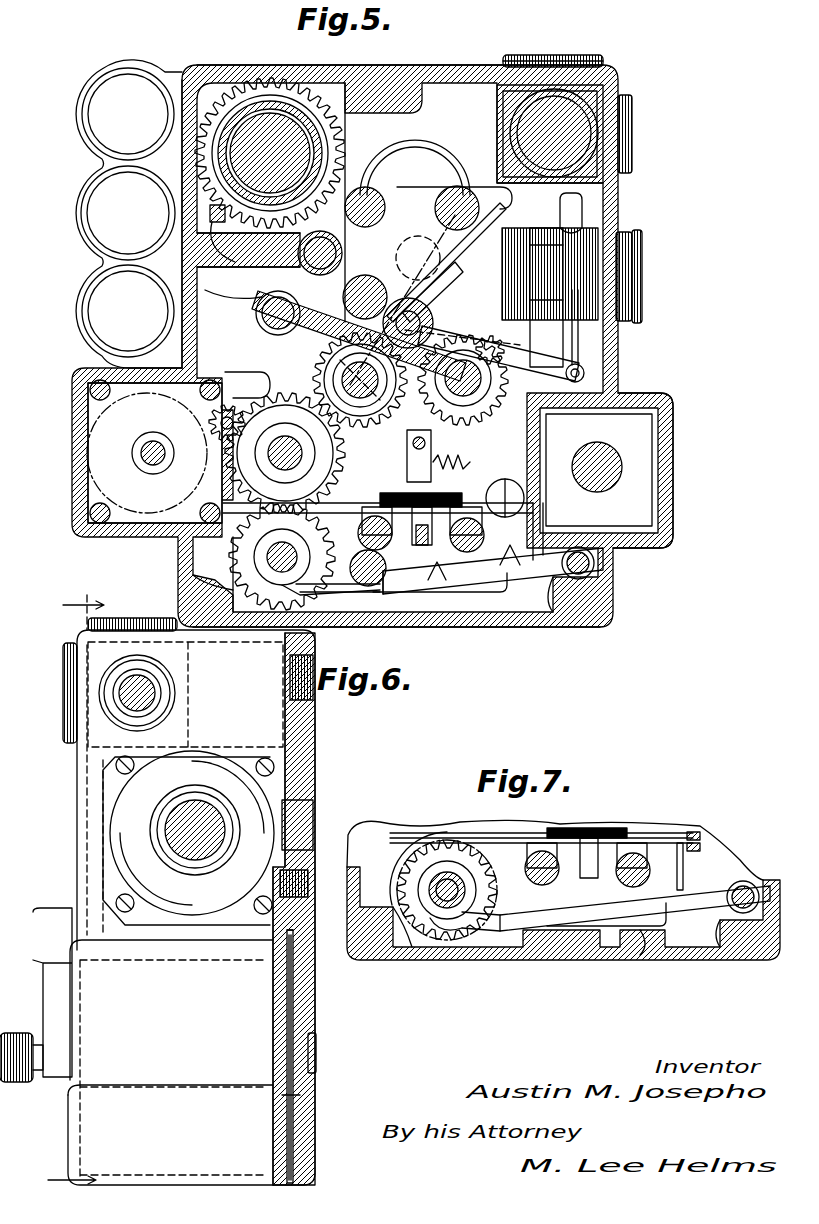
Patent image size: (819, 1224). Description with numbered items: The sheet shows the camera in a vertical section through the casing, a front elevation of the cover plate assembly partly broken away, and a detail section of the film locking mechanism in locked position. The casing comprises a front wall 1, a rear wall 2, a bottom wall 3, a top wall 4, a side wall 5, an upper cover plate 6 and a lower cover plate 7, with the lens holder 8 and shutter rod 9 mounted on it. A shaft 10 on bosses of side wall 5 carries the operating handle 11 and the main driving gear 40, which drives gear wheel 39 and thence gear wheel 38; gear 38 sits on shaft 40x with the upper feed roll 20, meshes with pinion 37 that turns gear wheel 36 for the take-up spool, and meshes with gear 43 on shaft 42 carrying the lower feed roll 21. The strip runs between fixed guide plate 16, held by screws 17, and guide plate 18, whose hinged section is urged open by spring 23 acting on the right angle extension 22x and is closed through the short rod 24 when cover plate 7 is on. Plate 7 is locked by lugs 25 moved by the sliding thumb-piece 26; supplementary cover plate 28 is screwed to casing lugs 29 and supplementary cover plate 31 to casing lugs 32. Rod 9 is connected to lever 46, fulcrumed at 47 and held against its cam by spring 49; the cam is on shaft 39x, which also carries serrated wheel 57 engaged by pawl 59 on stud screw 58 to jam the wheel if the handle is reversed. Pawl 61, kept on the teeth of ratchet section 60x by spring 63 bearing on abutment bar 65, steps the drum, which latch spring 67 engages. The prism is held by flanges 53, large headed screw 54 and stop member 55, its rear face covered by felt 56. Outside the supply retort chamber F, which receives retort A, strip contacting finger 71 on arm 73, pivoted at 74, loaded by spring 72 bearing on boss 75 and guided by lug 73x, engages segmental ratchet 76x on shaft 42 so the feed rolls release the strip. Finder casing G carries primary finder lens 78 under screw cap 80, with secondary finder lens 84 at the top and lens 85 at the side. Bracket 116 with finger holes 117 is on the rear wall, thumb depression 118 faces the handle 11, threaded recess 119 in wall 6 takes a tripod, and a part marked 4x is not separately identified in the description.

In FIG. 5, the front wall 1 is at (619, 205).
In FIG. 6, the front wall 1 is at (191, 907).
In FIG. 5, the rear wall 2 is at (182, 170).
In FIG. 5, the bottom wall 3 is at (521, 628).
In FIG. 6, the bottom wall 3 is at (310, 1185).
In FIG. 7, the bottom wall 3 is at (580, 961).
In FIG. 5, the top wall 4 is at (468, 66).
In FIG. 5, the bearing plate 4x is at (147, 453).
In FIG. 6, the bearing plate 4x is at (188, 845).
In FIG. 6, the side wall 5 is at (76, 803).
In FIG. 6, the upper cover plate 6 is at (316, 822).
In FIG. 6, the lower cover plate 7 is at (316, 1005).
In FIG. 5, the lens holder 8 is at (644, 258).
In FIG. 6, the lens holder 8 is at (150, 825).
In FIG. 5, the shutter rod 9 is at (583, 330).
In FIG. 5, the shaft 10 is at (527, 425).
In FIG. 5, the operating handle 11 is at (512, 470).
In FIG. 6, the operating handle 11 is at (50, 990).
In FIG. 5, the fixed guide plate 16 is at (480, 558).
In FIG. 7, the fixed guide plate 16 is at (702, 847).
In FIG. 5, the screws 17 is at (368, 538).
In FIG. 7, the screws 17 is at (530, 875).
In FIG. 5, the guide plate 18 is at (206, 488).
In FIG. 7, the guide plate 18 is at (700, 838).
In FIG. 5, the upper feed roll 20 is at (280, 395).
In FIG. 7, the upper feed roll 20 is at (440, 820).
In FIG. 5, the lower feed roll 21 is at (240, 545).
In FIG. 7, the lower feed roll 21 is at (405, 880).
In FIG. 5, the right angle extension 22x is at (432, 500).
In FIG. 7, the right angle extension 22x is at (590, 845).
In FIG. 5, the spring 23 is at (438, 456).
In FIG. 5, the short rod 24 is at (415, 542).
In FIG. 6, the locking lugs 25 is at (289, 990).
In FIG. 6, the sliding thumb-piece 26 is at (316, 1050).
In FIG. 6, the supplementary cover plate 28 is at (296, 1100).
In FIG. 5, the casing lugs 29 is at (190, 592).
In FIG. 7, the casing lugs 29 is at (410, 950).
In FIG. 6, the supplementary cover plate 31 is at (295, 978).
In FIG. 5, the casing lugs 32 is at (522, 382).
In FIG. 5, the gear wheel 36 is at (155, 451).
In FIG. 5, the pinion 37 is at (212, 424).
In FIG. 5, the gear wheel 38 is at (322, 470).
In FIG. 5, the gear wheel 39 is at (362, 430).
In FIG. 5, the shaft 39x is at (346, 330).
In FIG. 5, the main driving gear 40 is at (465, 340).
In FIG. 5, the shaft 40x is at (285, 442).
In FIG. 5, the shaft 42 is at (278, 545).
In FIG. 7, the shaft 42 is at (447, 890).
In FIG. 5, the gear 43 is at (326, 540).
In FIG. 7, the gear 43 is at (500, 932).
In FIG. 5, the lever 46 is at (505, 355).
In FIG. 5, the fulcrum 47 is at (394, 265).
In FIG. 5, the spring 49 is at (395, 435).
In FIG. 5, the holding flanges 53 is at (524, 212).
In FIG. 5, the large headed screw 54 is at (448, 287).
In FIG. 5, the stop member 55 is at (452, 268).
In FIG. 5, the felt strip 56 is at (438, 238).
In FIG. 5, the wheel 57 is at (370, 410).
In FIG. 5, the stud screw 58 is at (262, 313).
In FIG. 5, the pawl 59 is at (300, 343).
In FIG. 5, the ratchet section 60x is at (248, 80).
In FIG. 5, the pawl 61 is at (210, 212).
In FIG. 5, the spring 63 is at (210, 226).
In FIG. 5, the abutment bar 65 is at (210, 255).
In FIG. 5, the latch spring 67 is at (322, 234).
In FIG. 5, the strip contacting finger 71 is at (538, 572).
In FIG. 7, the strip contacting finger 71 is at (683, 866).
In FIG. 5, the spring 72 is at (490, 600).
In FIG. 7, the spring 72 is at (655, 935).
In FIG. 5, the finger holding arm 73 is at (462, 600).
In FIG. 7, the finger holding arm 73 is at (635, 908).
In FIG. 5, the projecting lug 73x is at (385, 592).
In FIG. 5, the pivot 74 is at (596, 566).
In FIG. 7, the pivot 74 is at (747, 888).
In FIG. 5, the boss 75 is at (430, 598).
In FIG. 7, the boss 75 is at (615, 946).
In FIG. 5, the segmental ratchet 76x is at (245, 588).
In FIG. 7, the segmental ratchet 76x is at (445, 932).
In FIG. 6, the primary finder lens 78 is at (137, 693).
In FIG. 5, the screw cap 80 is at (633, 118).
In FIG. 6, the screw cap 80 is at (176, 693).
In FIG. 5, the secondary finder lens 84 is at (575, 55).
In FIG. 6, the secondary finder lens 84 is at (130, 620).
In FIG. 5, the lens 85 is at (513, 133).
In FIG. 6, the lens 85 is at (64, 690).
In FIG. 5, the bracket 116 is at (92, 160).
In FIG. 5, the finger holes 117 is at (95, 103).
In FIG. 5, the thumb depression 118 is at (425, 137).
In FIG. 6, the thumb depression 118 is at (302, 755).
In FIG. 6, the threaded recess 119 is at (314, 885).
In FIG. 5, the retort A is at (599, 470).
In FIG. 5, the supply retort chamber F is at (668, 425).
In FIG. 5, the finder casing G is at (503, 107).